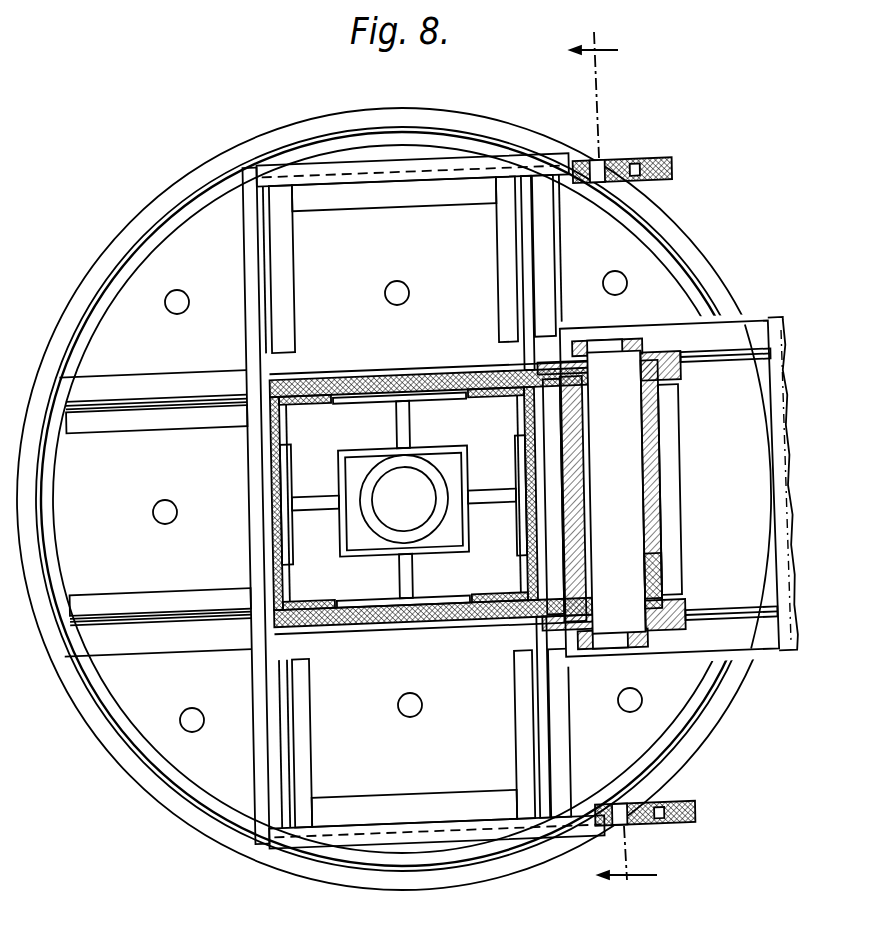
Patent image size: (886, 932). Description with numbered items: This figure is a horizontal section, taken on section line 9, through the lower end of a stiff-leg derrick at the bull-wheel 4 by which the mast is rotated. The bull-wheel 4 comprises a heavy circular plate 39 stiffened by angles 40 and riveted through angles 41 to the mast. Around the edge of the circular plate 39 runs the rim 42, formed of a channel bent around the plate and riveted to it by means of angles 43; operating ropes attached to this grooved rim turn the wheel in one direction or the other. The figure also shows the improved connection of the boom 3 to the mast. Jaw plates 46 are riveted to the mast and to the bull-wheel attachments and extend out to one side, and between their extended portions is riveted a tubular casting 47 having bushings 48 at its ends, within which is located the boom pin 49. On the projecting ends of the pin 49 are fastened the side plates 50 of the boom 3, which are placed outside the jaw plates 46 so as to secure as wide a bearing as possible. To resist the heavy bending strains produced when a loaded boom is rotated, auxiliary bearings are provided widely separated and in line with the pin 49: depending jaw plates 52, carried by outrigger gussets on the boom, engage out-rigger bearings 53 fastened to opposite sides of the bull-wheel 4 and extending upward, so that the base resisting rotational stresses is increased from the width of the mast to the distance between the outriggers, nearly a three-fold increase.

The boom 3 is at (784, 337).
The bull-wheel 4 is at (402, 499).
The section line 9- 9 is at (613, 457).
The plate 39 is at (397, 501).
The angles 40 is at (132, 381).
The angles 41 is at (256, 535).
The rim 42 is at (132, 772).
The angles 43 is at (207, 797).
The jaw plates 46 is at (684, 389).
The tubular casting 47 is at (653, 465).
The bushings 48 is at (649, 570).
The pin 49 is at (632, 516).
The side plates 50 is at (703, 368).
The jaw plates 52 is at (671, 170).
The out-rigger bearings 53 is at (569, 189).